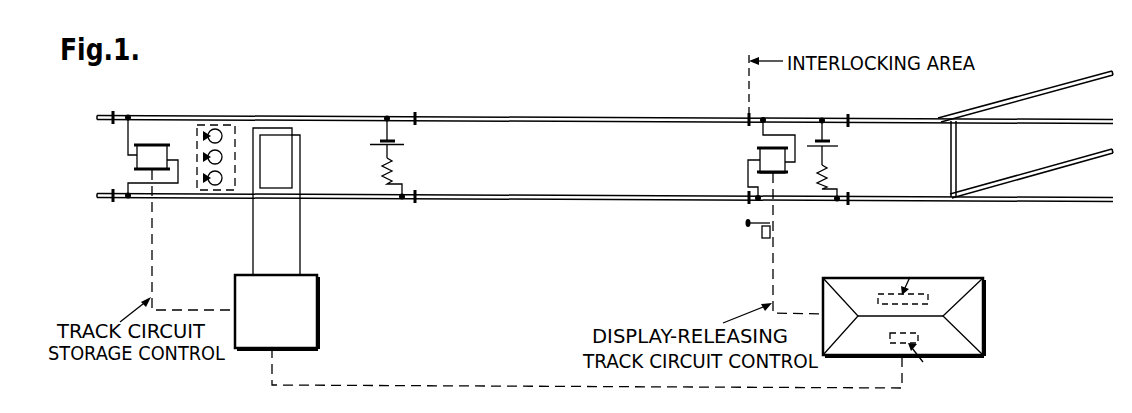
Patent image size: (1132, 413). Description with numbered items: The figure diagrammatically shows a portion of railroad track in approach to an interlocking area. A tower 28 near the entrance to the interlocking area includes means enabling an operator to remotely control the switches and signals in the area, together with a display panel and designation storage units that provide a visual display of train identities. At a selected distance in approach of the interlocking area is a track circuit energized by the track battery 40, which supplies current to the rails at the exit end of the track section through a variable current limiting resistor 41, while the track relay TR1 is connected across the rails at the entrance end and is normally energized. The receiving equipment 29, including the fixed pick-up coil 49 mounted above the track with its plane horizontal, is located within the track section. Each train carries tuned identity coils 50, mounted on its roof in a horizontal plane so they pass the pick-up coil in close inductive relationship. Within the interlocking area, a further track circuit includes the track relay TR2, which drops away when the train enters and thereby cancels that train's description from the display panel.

The train-carried identity coils 50 is at (280, 127).
The fixed pick-up coil 49 is at (292, 168).
The track battery 40 is at (396, 142).
The variable current limiting resistor 41 is at (404, 162).
The receiving equipment 29 is at (318, 310).
The tower 28 is at (984, 318).
The track relay TR1 is at (153, 156).
The track relay TR2 is at (765, 155).